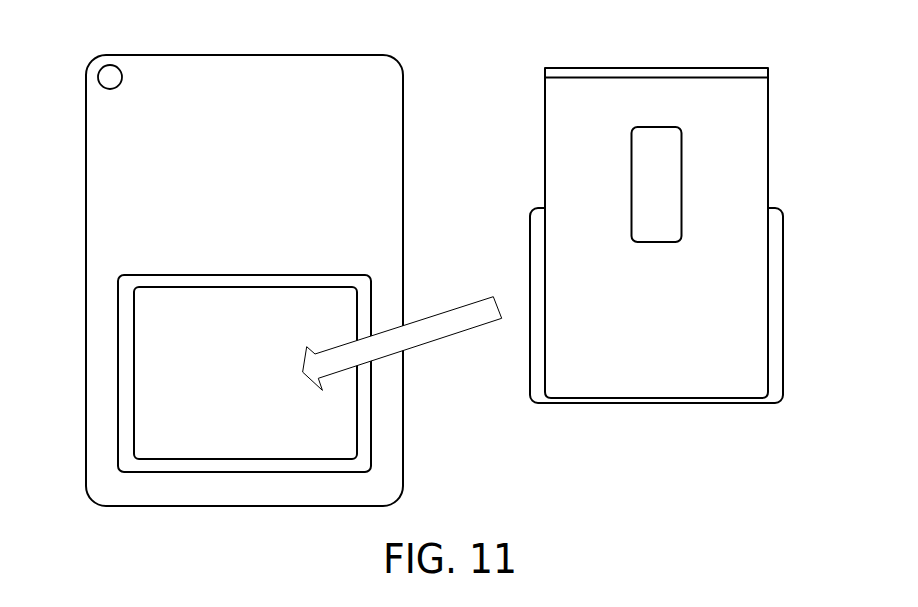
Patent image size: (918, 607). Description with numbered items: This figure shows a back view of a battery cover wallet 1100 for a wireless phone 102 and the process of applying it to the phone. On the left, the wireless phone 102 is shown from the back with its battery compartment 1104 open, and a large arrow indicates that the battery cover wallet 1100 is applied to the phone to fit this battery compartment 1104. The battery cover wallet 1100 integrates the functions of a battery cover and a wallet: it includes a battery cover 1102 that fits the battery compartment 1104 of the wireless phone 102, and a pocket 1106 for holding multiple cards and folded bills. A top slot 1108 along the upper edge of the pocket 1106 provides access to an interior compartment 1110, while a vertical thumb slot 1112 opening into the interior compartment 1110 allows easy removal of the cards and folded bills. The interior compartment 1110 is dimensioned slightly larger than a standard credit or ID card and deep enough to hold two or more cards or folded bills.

The wireless phone 102 is at (213, 71).
The battery compartment 1104 is at (128, 351).
The battery cover wallet 1100 is at (530, 73).
The top slot 1108 is at (720, 71).
The pocket 1106 is at (735, 151).
The interior compartment 1110 is at (667, 203).
The vertical thumb slot 1112 is at (621, 162).
The battery cover 1102 is at (783, 323).